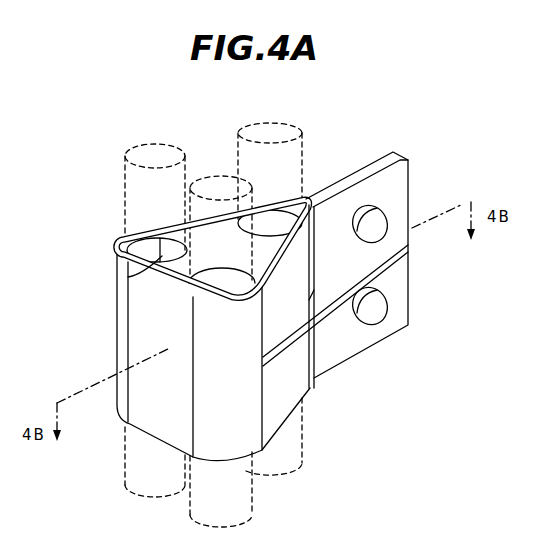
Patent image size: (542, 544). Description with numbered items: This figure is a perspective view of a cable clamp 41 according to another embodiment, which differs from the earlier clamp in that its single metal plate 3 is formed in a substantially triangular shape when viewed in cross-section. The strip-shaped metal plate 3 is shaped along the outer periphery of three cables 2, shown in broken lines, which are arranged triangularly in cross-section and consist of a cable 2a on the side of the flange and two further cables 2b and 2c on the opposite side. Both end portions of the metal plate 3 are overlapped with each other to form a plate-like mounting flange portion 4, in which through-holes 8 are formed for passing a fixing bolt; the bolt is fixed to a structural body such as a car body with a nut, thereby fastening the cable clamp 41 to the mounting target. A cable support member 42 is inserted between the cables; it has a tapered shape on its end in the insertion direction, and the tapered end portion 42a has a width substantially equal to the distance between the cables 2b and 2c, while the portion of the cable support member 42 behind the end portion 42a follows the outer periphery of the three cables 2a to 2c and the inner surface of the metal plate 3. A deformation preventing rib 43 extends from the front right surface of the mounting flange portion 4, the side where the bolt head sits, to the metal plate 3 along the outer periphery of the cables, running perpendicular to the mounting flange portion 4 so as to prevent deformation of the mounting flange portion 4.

The cables 2 is at (301, 121).
The cable 2a is at (268, 123).
The cable 2b is at (155, 148).
The cable 2c is at (224, 178).
The metal plate 3 is at (278, 403).
The mounting flange portion 4 is at (393, 322).
The through-holes 8 is at (382, 206).
The cable clamp 41 is at (485, 124).
The cable support member 42 is at (118, 256).
The tapered end portion 42a is at (130, 274).
The deformation preventing rib 43 is at (410, 261).